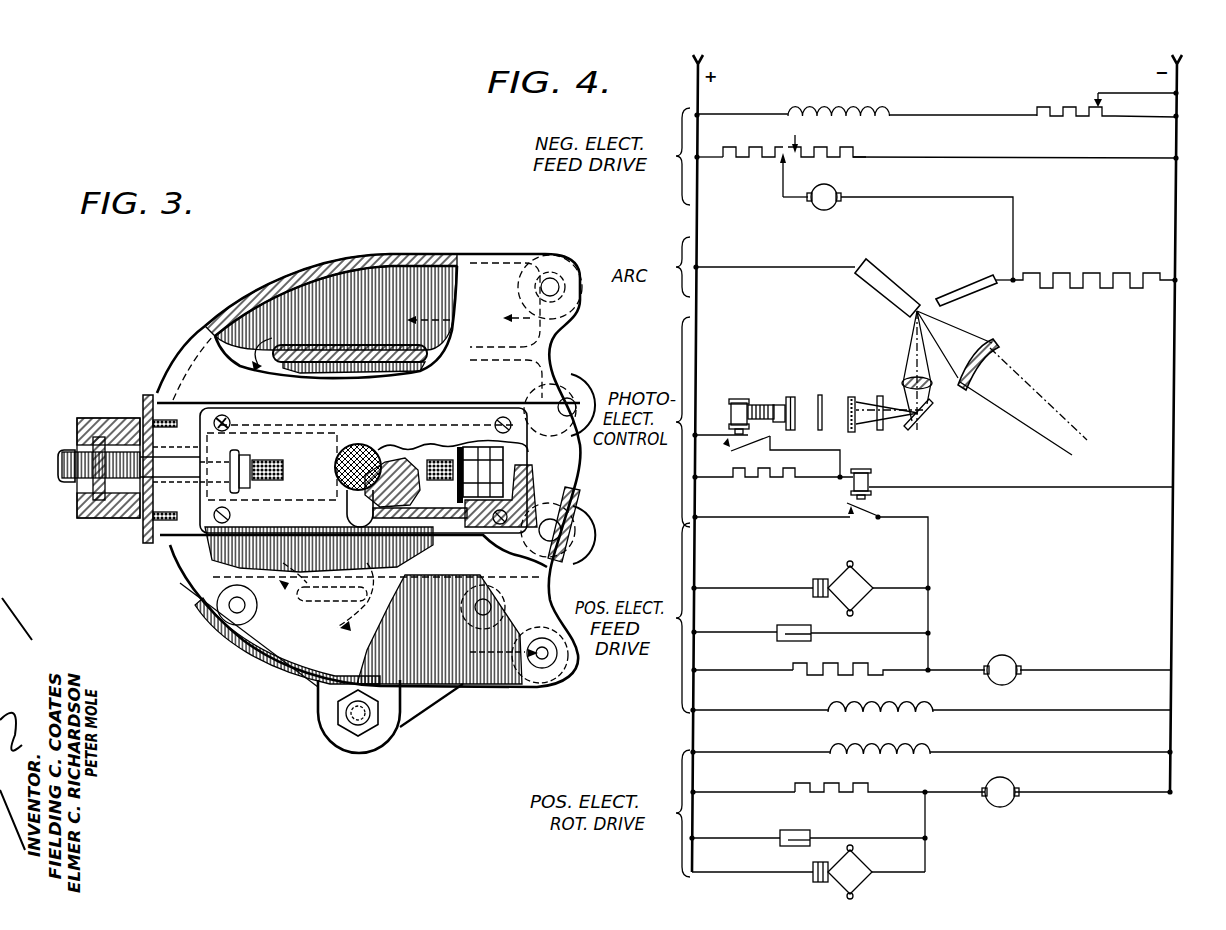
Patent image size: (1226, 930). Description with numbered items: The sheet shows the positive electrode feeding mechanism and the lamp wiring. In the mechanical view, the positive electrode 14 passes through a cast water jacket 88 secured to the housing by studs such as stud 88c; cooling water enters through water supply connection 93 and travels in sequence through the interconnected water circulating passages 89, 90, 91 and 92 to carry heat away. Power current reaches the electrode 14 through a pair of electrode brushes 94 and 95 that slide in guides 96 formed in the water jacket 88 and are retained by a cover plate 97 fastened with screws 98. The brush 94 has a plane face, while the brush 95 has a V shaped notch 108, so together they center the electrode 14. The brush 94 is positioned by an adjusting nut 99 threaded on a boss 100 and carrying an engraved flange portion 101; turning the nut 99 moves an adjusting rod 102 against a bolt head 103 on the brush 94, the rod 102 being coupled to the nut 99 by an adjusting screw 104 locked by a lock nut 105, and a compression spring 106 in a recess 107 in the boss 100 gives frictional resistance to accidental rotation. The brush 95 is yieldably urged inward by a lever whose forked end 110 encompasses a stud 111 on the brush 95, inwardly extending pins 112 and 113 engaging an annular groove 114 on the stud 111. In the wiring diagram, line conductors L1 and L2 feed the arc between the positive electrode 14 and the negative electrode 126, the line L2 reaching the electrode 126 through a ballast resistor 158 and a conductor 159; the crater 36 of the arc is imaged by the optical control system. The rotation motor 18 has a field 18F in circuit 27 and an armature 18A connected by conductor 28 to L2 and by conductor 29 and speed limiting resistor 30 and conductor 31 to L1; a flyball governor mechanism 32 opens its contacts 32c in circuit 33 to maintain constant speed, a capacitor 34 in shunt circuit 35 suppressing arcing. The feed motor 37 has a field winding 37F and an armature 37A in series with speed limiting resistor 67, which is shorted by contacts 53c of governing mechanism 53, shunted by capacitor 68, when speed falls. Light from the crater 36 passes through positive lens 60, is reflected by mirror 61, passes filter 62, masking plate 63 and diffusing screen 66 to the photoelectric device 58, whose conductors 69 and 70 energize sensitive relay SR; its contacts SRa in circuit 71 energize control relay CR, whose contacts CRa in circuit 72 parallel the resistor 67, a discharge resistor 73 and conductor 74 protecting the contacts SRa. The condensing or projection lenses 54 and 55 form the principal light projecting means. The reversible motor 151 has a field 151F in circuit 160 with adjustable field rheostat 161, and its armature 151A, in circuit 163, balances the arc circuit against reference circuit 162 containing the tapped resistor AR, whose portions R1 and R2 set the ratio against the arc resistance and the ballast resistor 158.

In FIG. 3, the positive electrode 14 is at (341, 474).
In FIG. 4, the positive electrode 14 is at (888, 290).
In FIG. 4, the motor 18 is at (1016, 789).
In FIG. 4, the armature 18A is at (1003, 801).
In FIG. 4, the field 18F is at (935, 750).
In FIG. 4, the circuit 27 is at (1033, 752).
In FIG. 4, the conductor 28 is at (1068, 795).
In FIG. 4, the conductor 29 is at (927, 822).
In FIG. 4, the speed limiting resistor 30 is at (832, 790).
In FIG. 4, the conductor 31 is at (767, 795).
In FIG. 4, the governor mechanism 32 is at (867, 872).
In FIG. 4, the contacts 32c is at (815, 868).
In FIG. 4, the circuit 33 is at (785, 876).
In FIG. 4, the capacitor 34 is at (799, 830).
In FIG. 4, the shunt circuit 35 is at (850, 838).
In FIG. 4, the crater 36 is at (918, 310).
In FIG. 4, the motor 37 is at (987, 665).
In FIG. 4, the armature 37A is at (1010, 661).
In FIG. 4, the field winding 37F is at (939, 698).
In FIG. 4, the governing mechanism 53 is at (871, 584).
In FIG. 4, the contacts 53c is at (815, 579).
In FIG. 4, the condensing lens 54 is at (985, 340).
In FIG. 4, the projection lens 55 is at (993, 346).
In FIG. 4, the photoelectric device 58 is at (792, 397).
In FIG. 4, the positive lens 60 is at (906, 378).
In FIG. 4, the mirror 61 is at (927, 413).
In FIG. 4, the filter 62 is at (880, 396).
In FIG. 4, the masking plate 63 is at (851, 397).
In FIG. 4, the diffusing screen 66 is at (821, 396).
In FIG. 4, the speed limiting resistor 67 is at (815, 678).
In FIG. 4, the capacitor 68 is at (797, 624).
In FIG. 4, the conductor 69 is at (760, 405).
In FIG. 4, the conductor 70 is at (780, 405).
In FIG. 4, the circuit 71 is at (796, 450).
In FIG. 4, the circuit 72 is at (930, 528).
In FIG. 4, the discharge resistor 73 is at (745, 478).
In FIG. 4, the conductor 74 is at (838, 471).
In FIG. 3, the water jacket 88 is at (342, 254).
In FIG. 3, the stud 88c is at (348, 728).
In FIG. 3, the water circulating passage 89 is at (397, 285).
In FIG. 3, the water circulating passage 90 is at (370, 368).
In FIG. 3, the water circulating passage 91 is at (362, 600).
In FIG. 3, the water circulating passage 92 is at (428, 628).
In FIG. 3, the water supply connection 93 is at (553, 280).
In FIG. 3, the electrode brush 94 is at (318, 452).
In FIG. 3, the electrode brush 95 is at (400, 457).
In FIG. 3, the guides 96 is at (326, 440).
In FIG. 3, the cover plate 97 is at (195, 538).
In FIG. 3, the screws 98 is at (222, 415).
In FIG. 3, the adjusting nut 99 is at (79, 417).
In FIG. 3, the boss 100 is at (147, 533).
In FIG. 3, the flange portion 101 is at (138, 409).
In FIG. 3, the adjusting rod 102 is at (140, 470).
In FIG. 3, the bolt head 103 is at (238, 450).
In FIG. 3, the adjusting screw 104 is at (58, 470).
In FIG. 3, the lock nut 105 is at (67, 452).
In FIG. 3, the compression spring 106 is at (78, 518).
In FIG. 3, the recess 107 is at (130, 446).
In FIG. 3, the V shaped notch 108 is at (390, 537).
In FIG. 3, the forked end 110 is at (508, 456).
In FIG. 3, the stud 111 is at (438, 478).
In FIG. 3, the pin 112 is at (478, 505).
In FIG. 3, the pin 113 is at (470, 445).
In FIG. 3, the annular groove 114 is at (548, 477).
In FIG. 4, the negative electrode 126 is at (962, 283).
In FIG. 4, the reversible electric motor 151 is at (818, 208).
In FIG. 4, the armature 151A is at (833, 194).
In FIG. 4, the field 151F is at (878, 104).
In FIG. 4, the ballast resistor 158 is at (1077, 273).
In FIG. 4, the conductor 159 is at (1003, 282).
In FIG. 4, the circuit 160 is at (975, 113).
In FIG. 4, the adjustable field rheostat 161 is at (1075, 93).
In FIG. 4, the reference circuit 162 is at (990, 150).
In FIG. 4, the circuit 163 is at (1007, 190).
In FIG. 4, the tapped resistor AR is at (781, 159).
In FIG. 4, the reference resistor R1 is at (772, 160).
In FIG. 4, the reference resistor R2 is at (832, 160).
In FIG. 4, the sensitive relay SR is at (733, 406).
In FIG. 4, the contacts SRa is at (767, 465).
In FIG. 4, the control relay CR is at (869, 479).
In FIG. 4, the contacts CRa is at (882, 544).
In FIG. 4, the line conductor L1 is at (699, 112).
In FIG. 4, the line conductor L2 is at (1178, 108).